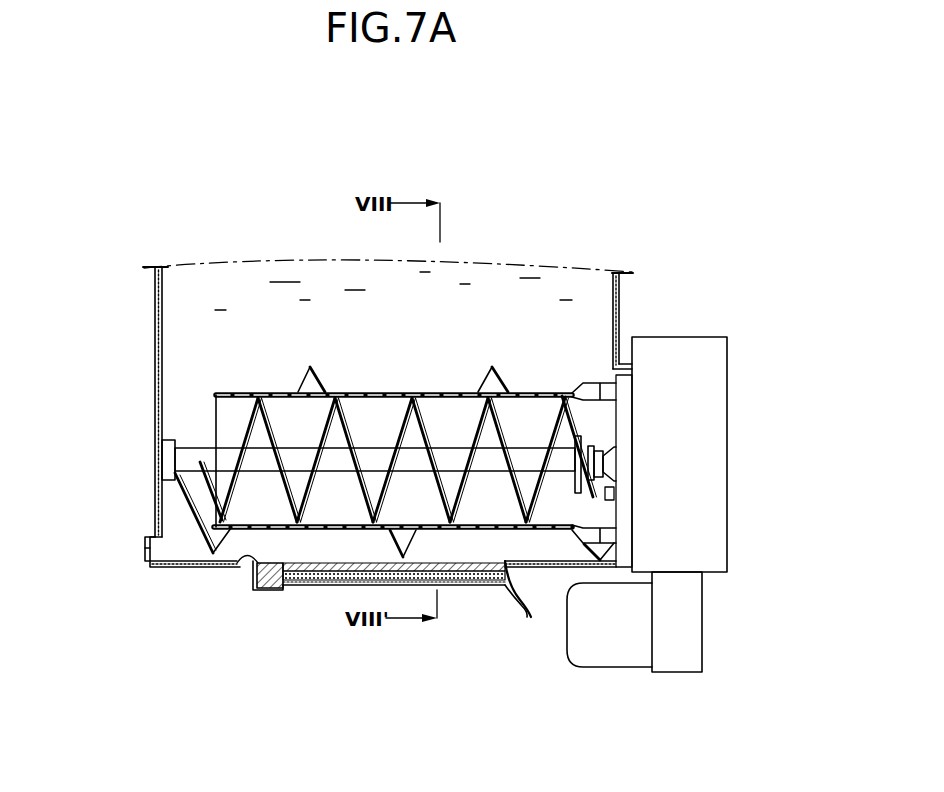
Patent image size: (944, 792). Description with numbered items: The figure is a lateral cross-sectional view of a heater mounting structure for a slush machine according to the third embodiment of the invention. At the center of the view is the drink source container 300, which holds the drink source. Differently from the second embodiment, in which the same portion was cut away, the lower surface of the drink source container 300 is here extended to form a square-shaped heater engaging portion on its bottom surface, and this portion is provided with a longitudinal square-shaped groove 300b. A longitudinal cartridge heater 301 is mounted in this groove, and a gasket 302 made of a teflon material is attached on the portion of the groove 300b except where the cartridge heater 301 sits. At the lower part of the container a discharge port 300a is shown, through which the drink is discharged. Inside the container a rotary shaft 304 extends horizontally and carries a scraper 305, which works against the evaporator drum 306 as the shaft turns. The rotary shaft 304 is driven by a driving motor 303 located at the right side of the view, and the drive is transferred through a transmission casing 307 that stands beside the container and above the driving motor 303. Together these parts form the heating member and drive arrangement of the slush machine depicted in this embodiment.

The drink source container 300 is at (127, 290).
The discharge port 300a is at (150, 550).
The longitudinal square-shaped groove 300b is at (240, 565).
The cartridge heater 301 is at (300, 585).
The gasket 302 is at (482, 585).
The driving motor 303 is at (608, 655).
The rotary shaft 304 is at (372, 460).
The scraper 305 is at (350, 425).
The evaporator drum 306 is at (222, 378).
The transmission casing 307 is at (681, 355).